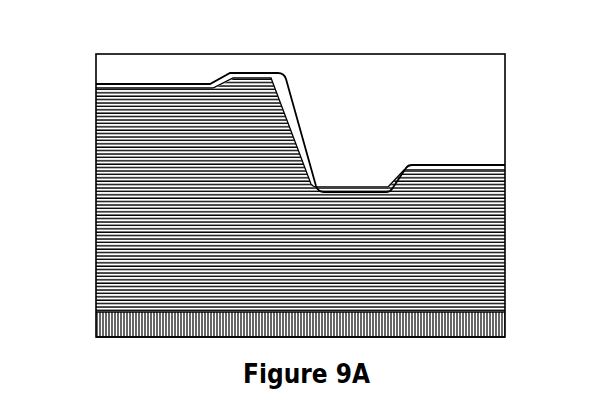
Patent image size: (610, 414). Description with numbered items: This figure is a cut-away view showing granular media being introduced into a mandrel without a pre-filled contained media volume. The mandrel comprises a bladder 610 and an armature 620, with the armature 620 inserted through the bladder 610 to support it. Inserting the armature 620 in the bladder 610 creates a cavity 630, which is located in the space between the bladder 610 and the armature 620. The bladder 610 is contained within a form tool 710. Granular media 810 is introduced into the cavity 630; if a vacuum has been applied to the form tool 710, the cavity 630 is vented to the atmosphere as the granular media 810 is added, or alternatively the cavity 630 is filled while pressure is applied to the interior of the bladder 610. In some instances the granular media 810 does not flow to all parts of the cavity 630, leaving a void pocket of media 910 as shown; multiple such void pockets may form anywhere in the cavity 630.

The form tool 710 is at (139, 68).
The bladder 610 is at (307, 124).
The void pocket of media 910 is at (275, 98).
The cavity 630 is at (505, 173).
The granular media 810 is at (200, 278).
The armature 620 is at (156, 338).